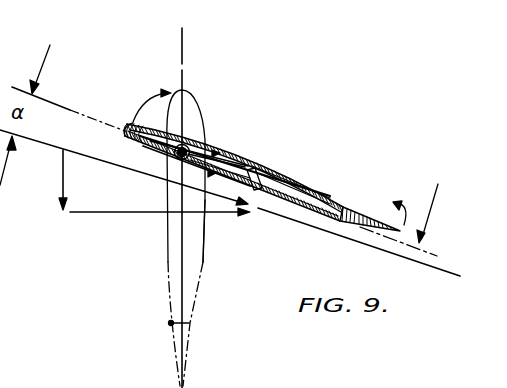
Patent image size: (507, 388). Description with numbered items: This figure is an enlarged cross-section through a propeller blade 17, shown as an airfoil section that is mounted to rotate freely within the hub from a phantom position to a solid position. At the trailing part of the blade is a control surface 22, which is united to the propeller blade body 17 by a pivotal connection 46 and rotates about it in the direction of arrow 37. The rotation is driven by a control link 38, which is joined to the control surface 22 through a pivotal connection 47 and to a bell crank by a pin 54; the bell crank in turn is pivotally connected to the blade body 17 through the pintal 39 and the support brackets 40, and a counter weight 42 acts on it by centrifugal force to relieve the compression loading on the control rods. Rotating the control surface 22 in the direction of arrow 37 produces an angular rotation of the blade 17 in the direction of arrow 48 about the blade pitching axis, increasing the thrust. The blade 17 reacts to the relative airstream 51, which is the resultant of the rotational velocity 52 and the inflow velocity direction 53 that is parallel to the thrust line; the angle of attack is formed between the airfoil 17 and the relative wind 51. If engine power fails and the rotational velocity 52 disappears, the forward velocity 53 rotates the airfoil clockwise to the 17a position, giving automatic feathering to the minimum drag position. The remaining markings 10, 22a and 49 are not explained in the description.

The wind direction arrow 10 is at (68, 109).
The propeller blade 17 is at (245, 150).
The feathered blade position 17a is at (192, 260).
The control surface 22 is at (386, 210).
The flap axis projection 22a is at (190, 366).
The arrow 37 is at (405, 222).
The control link 38 is at (327, 200).
The pintal 39 is at (230, 148).
The support brackets 40 is at (250, 164).
The counter weight 42 is at (210, 142).
The pivotal connection 46 is at (338, 236).
The pivotal connection 47 is at (358, 211).
The arrow 48 is at (137, 115).
The leading edge 49 is at (131, 141).
The relative airstream 51 is at (140, 173).
The rotational velocity 52 is at (134, 214).
The inflow velocity direction 53 is at (62, 162).
The pin 54 is at (262, 166).